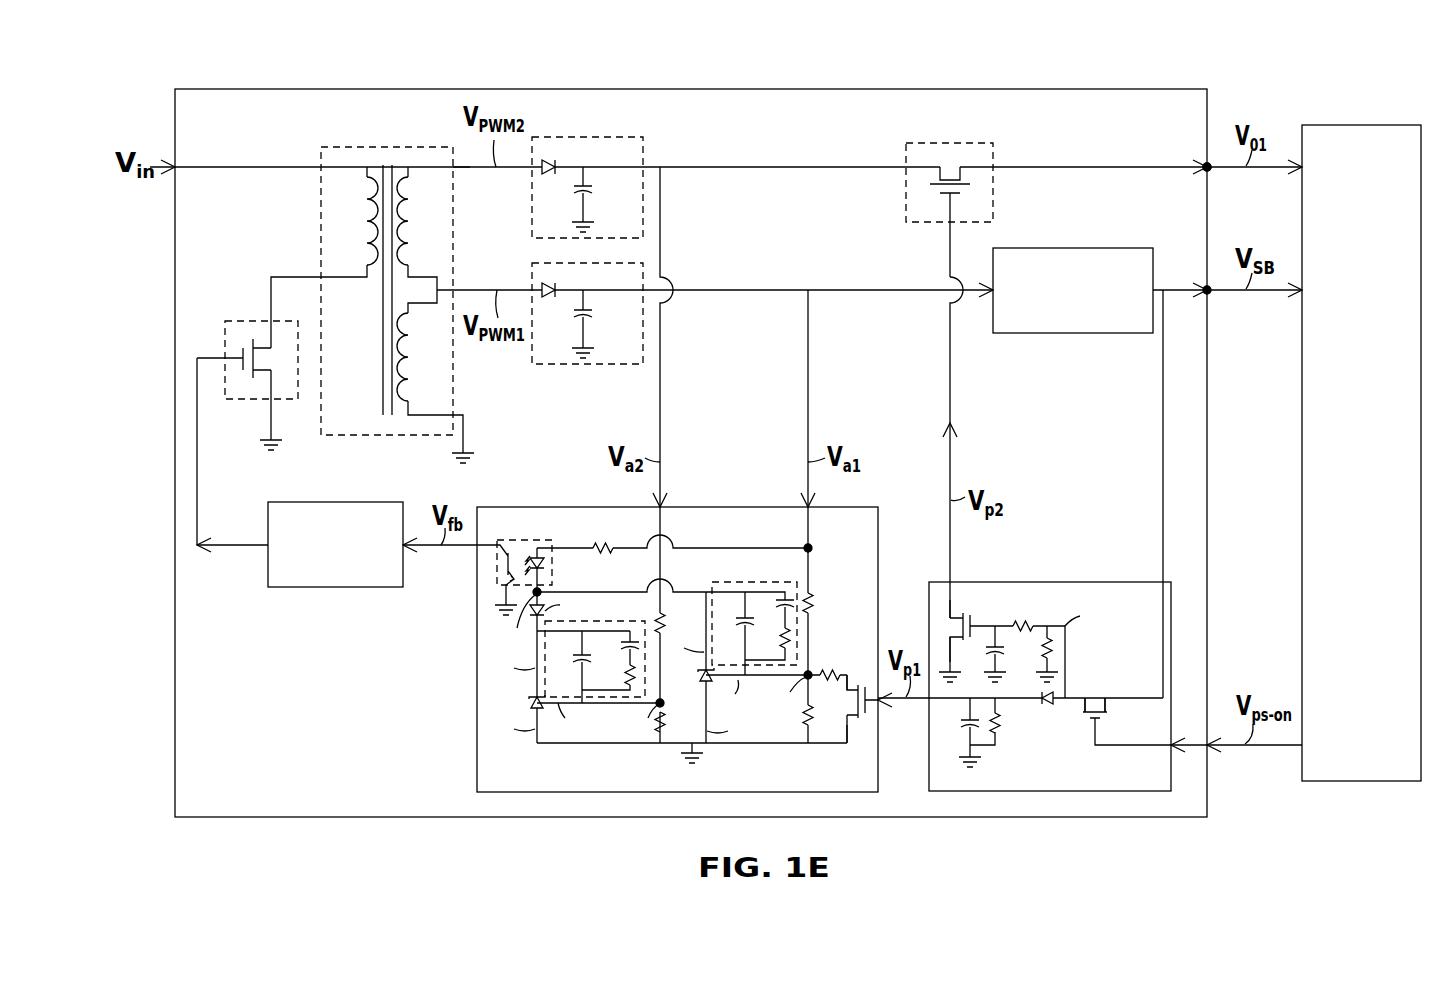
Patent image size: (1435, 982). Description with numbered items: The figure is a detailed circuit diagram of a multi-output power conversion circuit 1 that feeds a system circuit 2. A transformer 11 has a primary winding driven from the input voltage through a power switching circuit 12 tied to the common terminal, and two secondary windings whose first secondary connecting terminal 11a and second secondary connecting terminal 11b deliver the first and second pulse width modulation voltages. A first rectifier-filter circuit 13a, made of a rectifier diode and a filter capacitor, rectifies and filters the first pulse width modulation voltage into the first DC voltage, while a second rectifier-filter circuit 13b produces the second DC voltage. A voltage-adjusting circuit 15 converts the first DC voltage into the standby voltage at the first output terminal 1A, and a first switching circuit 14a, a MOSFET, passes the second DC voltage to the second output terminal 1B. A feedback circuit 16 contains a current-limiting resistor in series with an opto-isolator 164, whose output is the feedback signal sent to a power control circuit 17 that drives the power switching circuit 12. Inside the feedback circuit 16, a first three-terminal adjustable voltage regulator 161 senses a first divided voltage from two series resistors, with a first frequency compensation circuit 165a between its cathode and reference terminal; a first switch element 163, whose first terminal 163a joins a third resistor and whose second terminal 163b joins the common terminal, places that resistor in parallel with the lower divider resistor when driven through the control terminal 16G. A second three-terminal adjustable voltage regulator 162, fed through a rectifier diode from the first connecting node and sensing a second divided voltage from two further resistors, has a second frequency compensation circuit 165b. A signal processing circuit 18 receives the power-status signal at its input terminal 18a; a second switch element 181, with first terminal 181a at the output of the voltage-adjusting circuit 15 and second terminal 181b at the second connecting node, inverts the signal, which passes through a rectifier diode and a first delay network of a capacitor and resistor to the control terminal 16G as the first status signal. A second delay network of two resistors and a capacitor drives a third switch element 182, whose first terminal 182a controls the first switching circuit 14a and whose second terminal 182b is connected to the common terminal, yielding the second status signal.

The power conversion circuit 1 is at (672, 89).
The system circuit 2 is at (1352, 125).
The transformer 11 is at (370, 147).
The first secondary connecting terminal 11a is at (453, 290).
The second secondary connecting terminal 11b is at (453, 167).
The power switching circuit 12 is at (250, 321).
The first rectifier-filter circuit 13a is at (585, 364).
The second rectifier-filter circuit 13b is at (583, 137).
The first switching circuit 14a is at (950, 143).
The voltage-adjusting circuit 15 is at (1045, 248).
The feedback circuit 16 is at (858, 507).
The control terminal of feedback circuit 16G is at (879, 702).
The power control circuit 17 is at (328, 502).
The signal processing circuit 18 is at (1052, 582).
The input terminal of signal processing circuit 18a is at (1176, 750).
The first three-terminal adjustable voltage regulator 161 is at (705, 674).
The second three-terminal adjustable voltage regulator 162 is at (531, 703).
The first switch element 163 is at (866, 720).
The first terminal of first switch element 163a is at (850, 682).
The second terminal of first switch element 163b is at (845, 742).
The opto-isolator 164 is at (517, 540).
The first frequency compensation circuit 165a is at (775, 582).
The second frequency compensation circuit 165b is at (620, 620).
The second switch element 181 is at (1093, 697).
The first terminal of second switch element 181a is at (1107, 703).
The second terminal of second switch element 181b is at (1080, 702).
The third switch element 182 is at (965, 612).
The first terminal of third switch element 182a is at (950, 605).
The second terminal of third switch element 182b is at (950, 650).
The first output terminal 1A is at (1207, 290).
The second output terminal 1B is at (1207, 167).